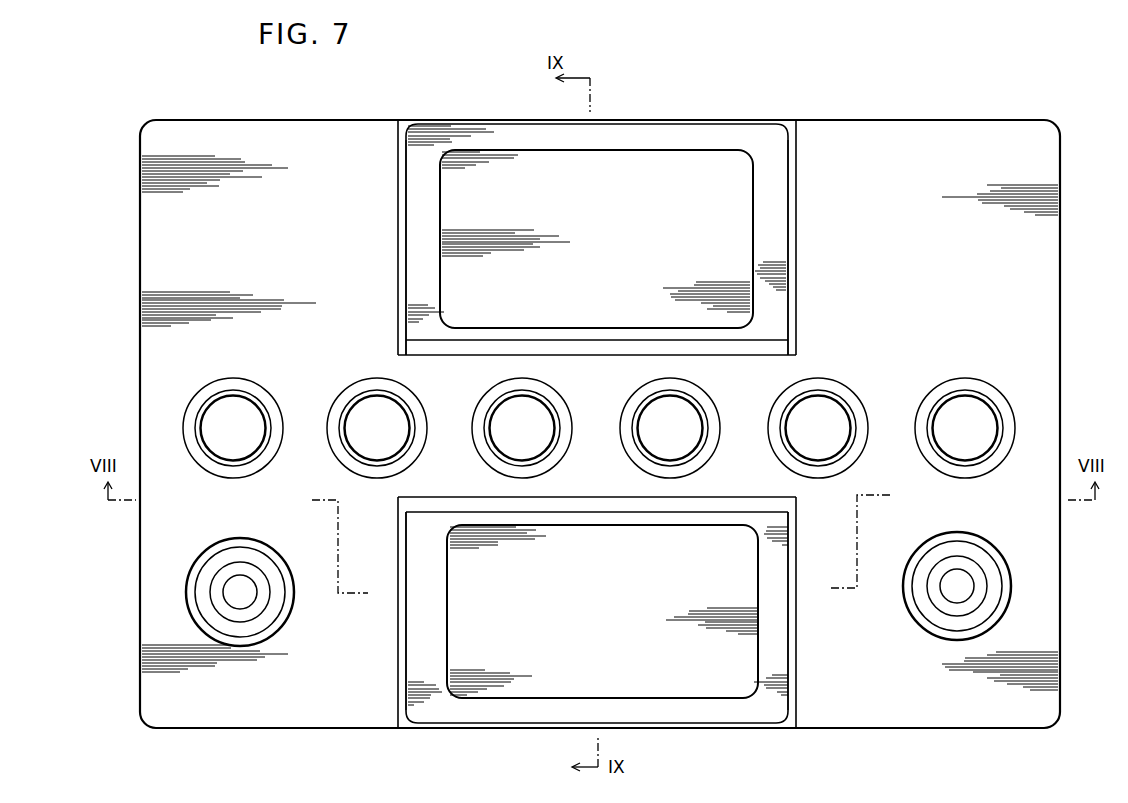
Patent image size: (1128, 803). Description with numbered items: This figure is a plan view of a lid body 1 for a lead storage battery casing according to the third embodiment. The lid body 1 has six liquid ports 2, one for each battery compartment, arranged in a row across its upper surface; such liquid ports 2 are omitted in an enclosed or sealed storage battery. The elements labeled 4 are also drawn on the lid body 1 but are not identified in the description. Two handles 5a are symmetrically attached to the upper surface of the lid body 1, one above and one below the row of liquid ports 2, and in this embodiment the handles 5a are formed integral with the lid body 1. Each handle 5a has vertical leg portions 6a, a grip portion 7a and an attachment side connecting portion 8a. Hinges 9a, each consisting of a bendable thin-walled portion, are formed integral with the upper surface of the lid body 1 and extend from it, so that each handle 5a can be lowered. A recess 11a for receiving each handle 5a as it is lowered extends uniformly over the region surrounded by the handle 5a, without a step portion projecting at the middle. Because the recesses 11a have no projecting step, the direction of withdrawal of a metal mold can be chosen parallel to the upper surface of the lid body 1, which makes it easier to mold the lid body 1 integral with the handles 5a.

The lid body 1 is at (1008, 106).
The liquid port 2 is at (205, 422).
The circular switch socket 4 is at (222, 597).
The handle 5a is at (775, 120).
The vertical leg portion 6a is at (415, 228).
The grip portion 7a is at (655, 132).
The attachment side connecting portion 8a is at (712, 330).
The hinge 9a is at (735, 349).
The recess 11a is at (398, 274).